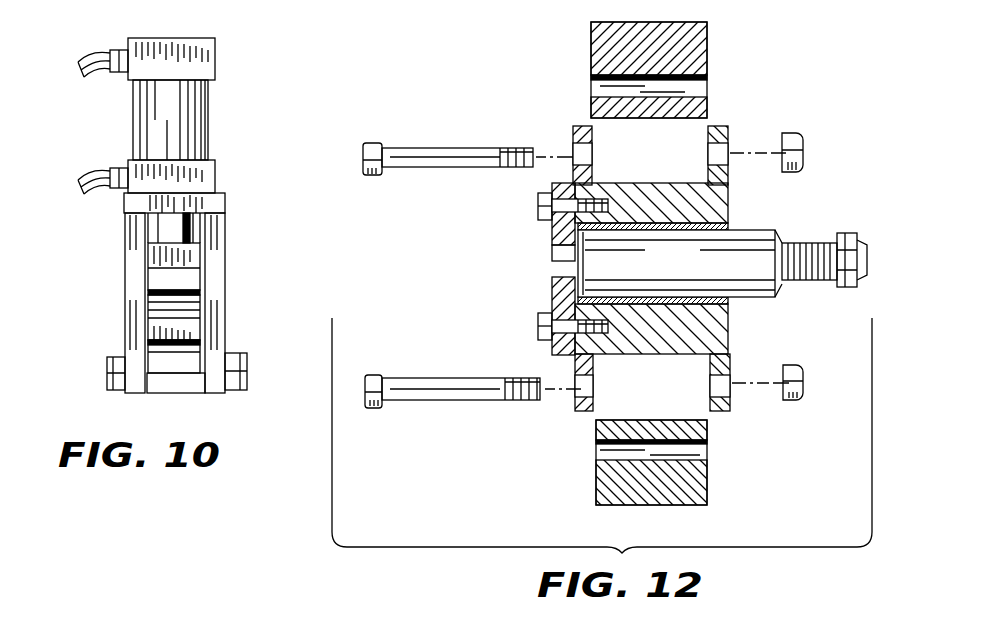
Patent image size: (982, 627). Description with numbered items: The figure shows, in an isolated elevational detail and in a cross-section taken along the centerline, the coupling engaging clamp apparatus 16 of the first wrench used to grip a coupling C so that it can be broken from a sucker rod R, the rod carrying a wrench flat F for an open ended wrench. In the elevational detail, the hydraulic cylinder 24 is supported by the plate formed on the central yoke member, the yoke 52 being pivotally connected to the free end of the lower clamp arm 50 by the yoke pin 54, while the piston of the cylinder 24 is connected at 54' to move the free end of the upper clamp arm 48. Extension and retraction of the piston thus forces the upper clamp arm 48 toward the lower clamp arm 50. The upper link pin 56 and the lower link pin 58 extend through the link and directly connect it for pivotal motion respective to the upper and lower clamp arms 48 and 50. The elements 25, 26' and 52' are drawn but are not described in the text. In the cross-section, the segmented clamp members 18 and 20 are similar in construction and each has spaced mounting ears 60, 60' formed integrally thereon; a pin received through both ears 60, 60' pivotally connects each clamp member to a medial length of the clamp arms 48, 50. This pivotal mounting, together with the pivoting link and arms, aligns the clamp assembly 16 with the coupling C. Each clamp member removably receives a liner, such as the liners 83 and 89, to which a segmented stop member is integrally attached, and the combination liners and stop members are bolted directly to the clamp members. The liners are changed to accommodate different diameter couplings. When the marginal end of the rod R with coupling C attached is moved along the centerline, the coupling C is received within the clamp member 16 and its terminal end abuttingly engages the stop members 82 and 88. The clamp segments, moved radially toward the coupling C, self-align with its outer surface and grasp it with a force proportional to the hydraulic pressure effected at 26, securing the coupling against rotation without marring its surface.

In FIG. 12, the clamp apparatus 16 is at (457, 430).
In FIG. 12, the clamp member 18 is at (533, 318).
In FIG. 12, the clamp member 20 is at (533, 215).
In FIG. 10, the hydraulic cylinder 24 is at (206, 84).
In FIG. 10, the mounting plate 25 is at (200, 220).
In FIG. 10, the hydraulic pressure 26 is at (91, 56).
In FIG. 10, the hydraulic hose fitting 26' is at (103, 165).
In FIG. 10, the upper clamp arm 48 is at (160, 278).
In FIG. 12, the upper clamp arm 48 is at (700, 45).
In FIG. 10, the lower clamp arm 50 is at (196, 314).
In FIG. 12, the lower clamp arm 50 is at (708, 480).
In FIG. 10, the yoke 52 is at (115, 303).
In FIG. 10, the side plate 52' is at (237, 303).
In FIG. 10, the yoke pin 54 is at (142, 366).
In FIG. 10, the piston connection 54' is at (253, 364).
In FIG. 12, the upper link pin 56 is at (435, 150).
In FIG. 12, the lower link pin 58 is at (443, 386).
In FIG. 12, the mounting ear 60 is at (556, 285).
In FIG. 12, the mounting ear 60' is at (757, 252).
In FIG. 12, the stop member 82 is at (552, 228).
In FIG. 12, the liner 83 is at (657, 226).
In FIG. 12, the stop member 88 is at (552, 284).
In FIG. 12, the liner 89 is at (635, 298).
In FIG. 12, the coupling C is at (755, 231).
In FIG. 12, the wrench flat F is at (801, 244).
In FIG. 12, the sucker rod R is at (855, 242).